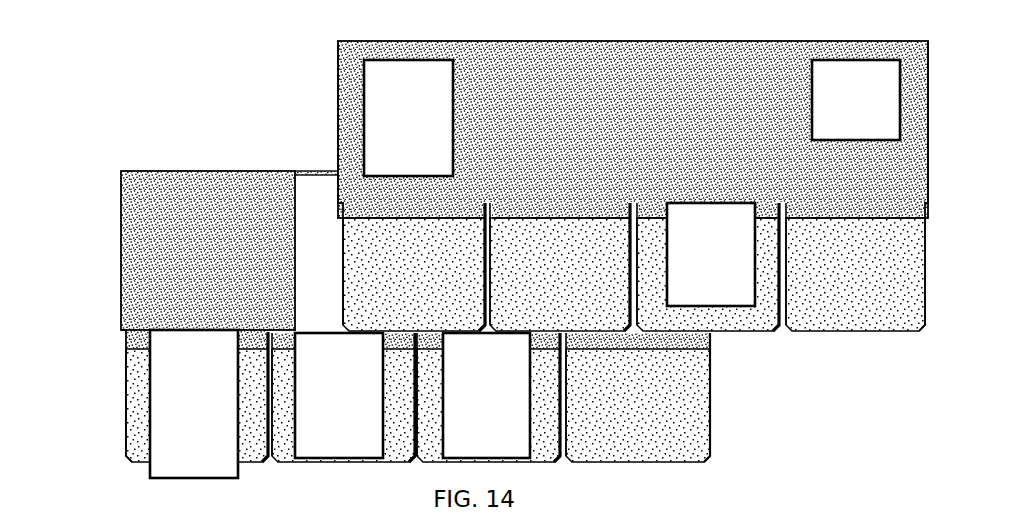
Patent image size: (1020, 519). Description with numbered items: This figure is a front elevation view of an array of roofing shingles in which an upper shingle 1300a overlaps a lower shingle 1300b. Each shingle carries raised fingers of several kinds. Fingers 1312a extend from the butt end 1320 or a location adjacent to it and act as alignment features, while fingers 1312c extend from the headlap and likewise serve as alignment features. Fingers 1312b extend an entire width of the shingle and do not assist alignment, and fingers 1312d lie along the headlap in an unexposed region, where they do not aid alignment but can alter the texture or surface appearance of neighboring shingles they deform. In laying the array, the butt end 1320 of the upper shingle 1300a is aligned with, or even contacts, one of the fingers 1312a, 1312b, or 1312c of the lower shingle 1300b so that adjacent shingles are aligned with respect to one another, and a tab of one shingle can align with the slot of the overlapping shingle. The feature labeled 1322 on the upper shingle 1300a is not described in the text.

The upper shingle 1300a is at (122, 171).
The lower shingle 1300b is at (337, 63).
The finger 1312a is at (166, 418).
The finger 1312b is at (311, 413).
The finger 1312c is at (381, 130).
The finger 1312d is at (828, 113).
The butt end 1320 is at (840, 336).
The wall 1322 is at (204, 326).